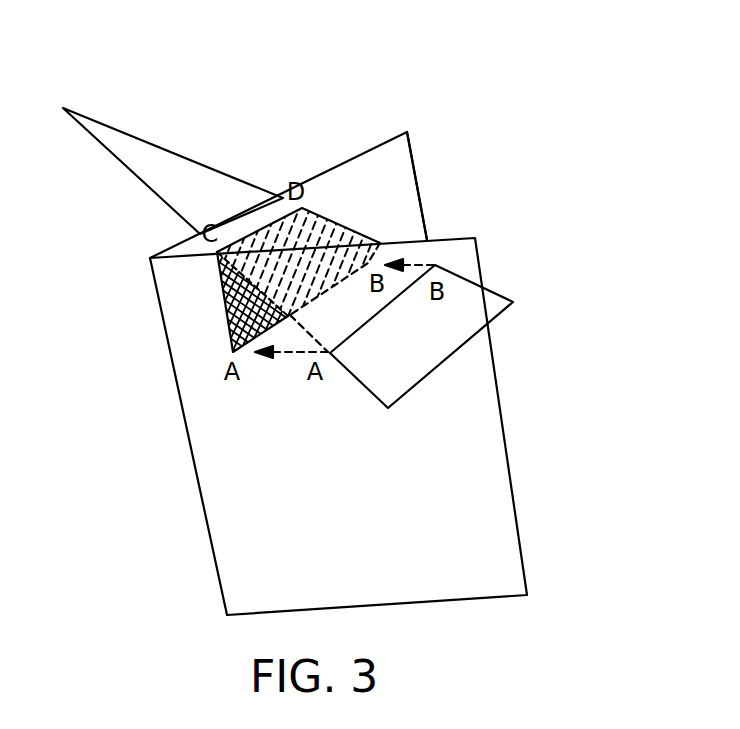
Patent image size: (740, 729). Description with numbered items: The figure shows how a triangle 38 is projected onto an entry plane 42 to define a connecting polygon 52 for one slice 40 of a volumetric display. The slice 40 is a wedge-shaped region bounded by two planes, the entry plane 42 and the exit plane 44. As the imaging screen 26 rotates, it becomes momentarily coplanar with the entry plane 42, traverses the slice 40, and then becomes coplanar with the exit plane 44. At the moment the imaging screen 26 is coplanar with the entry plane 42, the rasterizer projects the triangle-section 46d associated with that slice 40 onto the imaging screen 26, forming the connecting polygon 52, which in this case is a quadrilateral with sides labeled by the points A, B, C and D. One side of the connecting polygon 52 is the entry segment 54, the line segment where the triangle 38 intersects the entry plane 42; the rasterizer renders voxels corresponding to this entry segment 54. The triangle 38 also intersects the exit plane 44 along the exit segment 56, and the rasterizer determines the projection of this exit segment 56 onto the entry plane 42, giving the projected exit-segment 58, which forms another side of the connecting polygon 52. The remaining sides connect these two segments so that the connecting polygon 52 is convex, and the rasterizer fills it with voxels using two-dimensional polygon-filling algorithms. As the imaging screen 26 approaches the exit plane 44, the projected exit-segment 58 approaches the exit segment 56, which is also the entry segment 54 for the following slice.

The imaging screen 26 is at (395, 168).
The triangle 38 is at (93, 118).
The slice 40 is at (465, 204).
The entry plane 42 is at (397, 133).
The exit plane 44 is at (512, 472).
The triangle-section 46d is at (350, 227).
The connecting polygon 52 is at (227, 307).
The entry segment 54 is at (268, 225).
The exit segment 56 is at (385, 310).
The projected exit-segment 58 is at (227, 343).